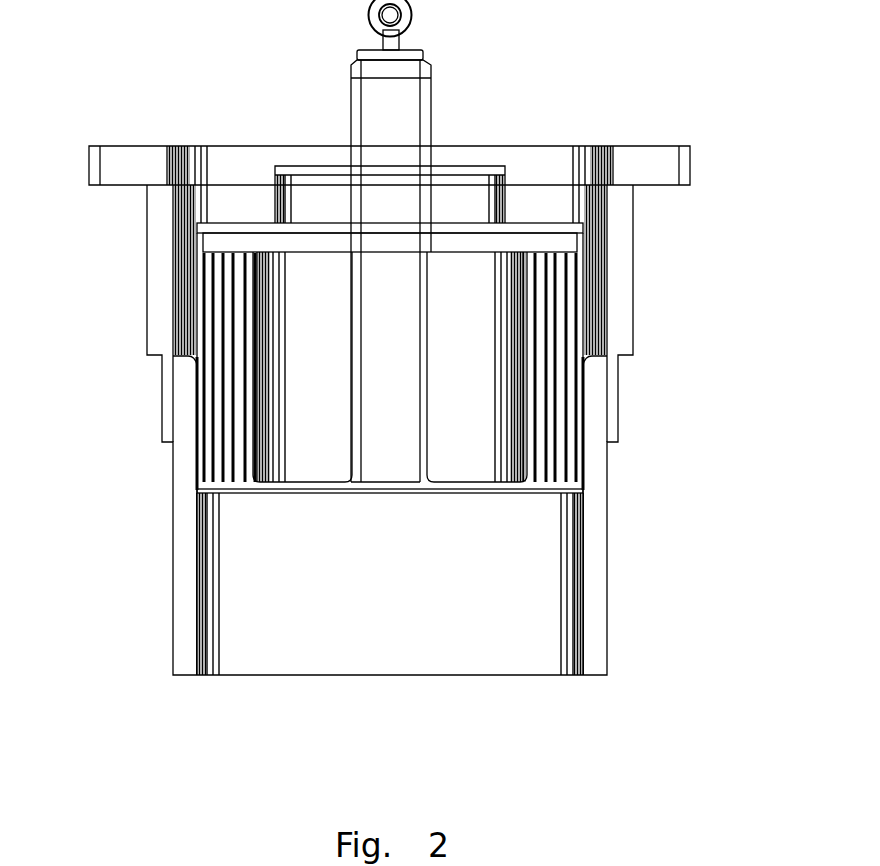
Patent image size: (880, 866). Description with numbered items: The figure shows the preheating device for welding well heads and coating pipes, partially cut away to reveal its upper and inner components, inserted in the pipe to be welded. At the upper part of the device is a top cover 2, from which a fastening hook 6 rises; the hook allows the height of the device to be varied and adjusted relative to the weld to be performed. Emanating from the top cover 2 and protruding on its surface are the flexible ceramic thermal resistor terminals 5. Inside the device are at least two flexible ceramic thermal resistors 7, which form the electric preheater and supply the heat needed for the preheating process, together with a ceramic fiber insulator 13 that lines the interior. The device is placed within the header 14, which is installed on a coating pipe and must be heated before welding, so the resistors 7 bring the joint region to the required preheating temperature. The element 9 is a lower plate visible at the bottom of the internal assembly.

The top cover 2 is at (282, 165).
The flexible ceramic thermal resistor terminals 5 is at (298, 138).
The fastening hook 6 is at (368, 20).
The flexible ceramic thermal resistors 7 is at (207, 398).
The bottom plate 9 is at (418, 490).
The ceramic fiber insulator 13 is at (242, 472).
The header 14 is at (147, 288).